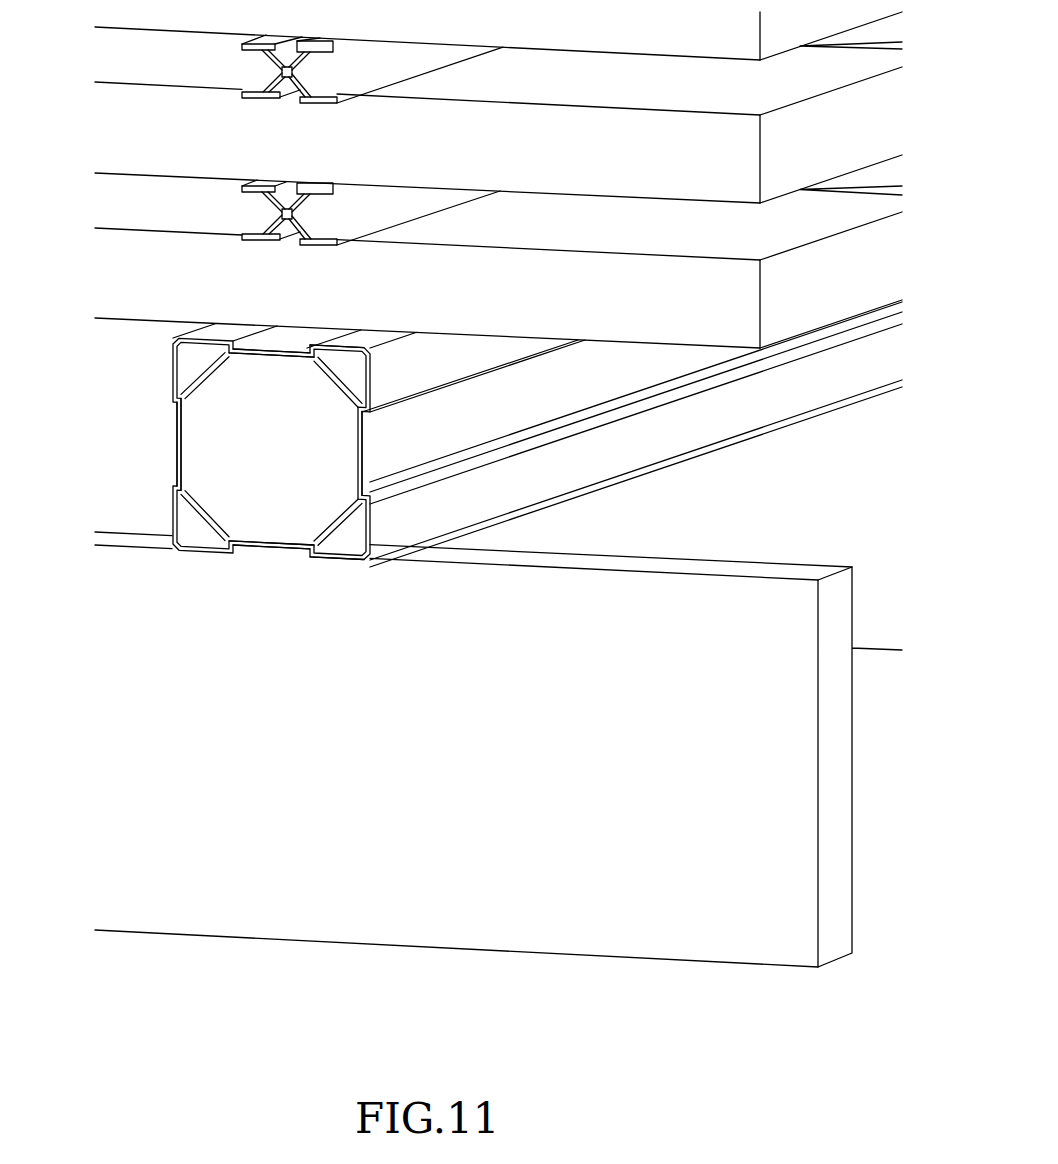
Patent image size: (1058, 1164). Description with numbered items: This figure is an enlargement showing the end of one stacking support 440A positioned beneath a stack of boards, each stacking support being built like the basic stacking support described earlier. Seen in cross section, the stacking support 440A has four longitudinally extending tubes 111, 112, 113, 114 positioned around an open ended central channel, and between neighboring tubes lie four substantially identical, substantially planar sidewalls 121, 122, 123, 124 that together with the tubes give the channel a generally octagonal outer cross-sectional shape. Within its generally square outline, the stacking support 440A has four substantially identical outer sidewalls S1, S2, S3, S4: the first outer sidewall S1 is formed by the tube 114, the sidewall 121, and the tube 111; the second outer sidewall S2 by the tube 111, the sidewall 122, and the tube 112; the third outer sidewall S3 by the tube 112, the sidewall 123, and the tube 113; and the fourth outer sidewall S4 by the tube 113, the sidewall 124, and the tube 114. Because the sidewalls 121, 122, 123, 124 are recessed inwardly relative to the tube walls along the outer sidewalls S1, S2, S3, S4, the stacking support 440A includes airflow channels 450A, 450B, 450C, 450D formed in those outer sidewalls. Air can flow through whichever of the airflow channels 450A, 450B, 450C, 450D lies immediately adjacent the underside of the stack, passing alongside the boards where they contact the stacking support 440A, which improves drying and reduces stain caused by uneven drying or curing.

The tube 111 is at (428, 366).
The sidewall 121 is at (268, 345).
The sidewall 122 is at (538, 398).
The sidewall 123 is at (307, 550).
The sidewall 124 is at (318, 346).
The tube 112 is at (350, 562).
The tube 113 is at (197, 515).
The tube 114 is at (190, 357).
The first outer sidewall S1 is at (308, 337).
The second outer sidewall S2 is at (456, 493).
The third outer sidewall S3 is at (342, 565).
The fourth outer sidewall S4 is at (172, 378).
The airflow channel 450A is at (178, 393).
The airflow channel 450B is at (360, 477).
The airflow channel 450C is at (271, 551).
The airflow channel 450D is at (171, 442).
The stacking support 440A is at (692, 452).